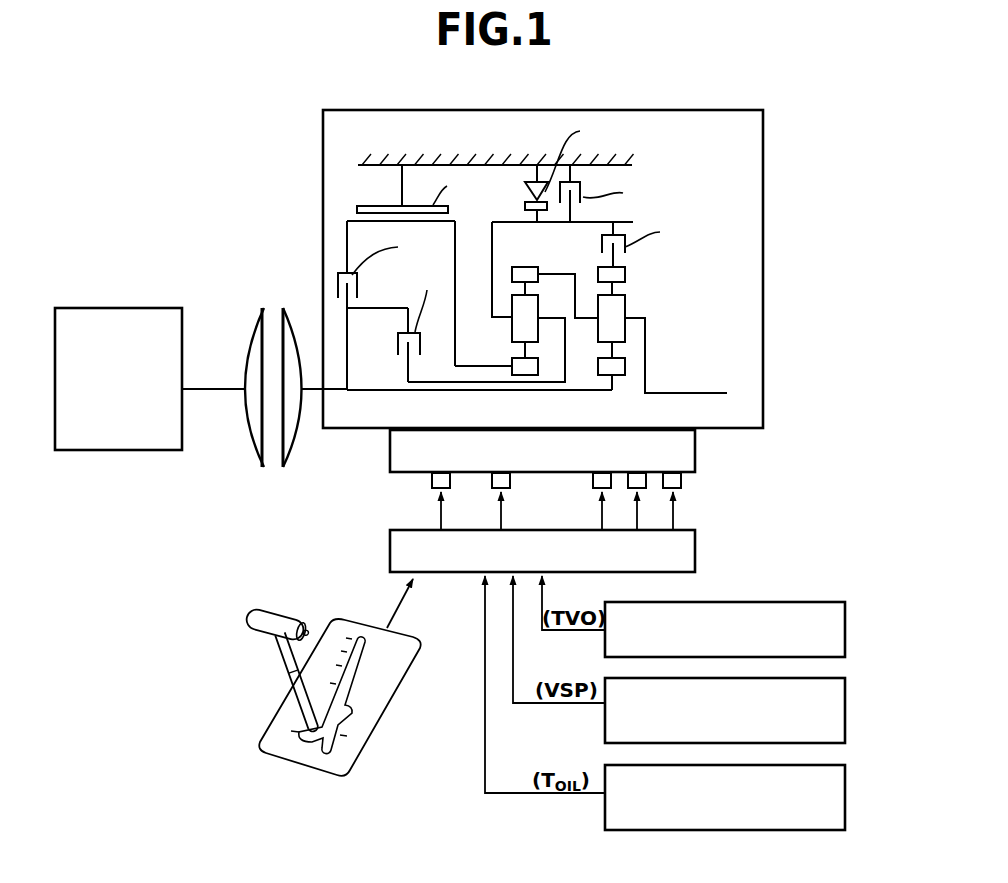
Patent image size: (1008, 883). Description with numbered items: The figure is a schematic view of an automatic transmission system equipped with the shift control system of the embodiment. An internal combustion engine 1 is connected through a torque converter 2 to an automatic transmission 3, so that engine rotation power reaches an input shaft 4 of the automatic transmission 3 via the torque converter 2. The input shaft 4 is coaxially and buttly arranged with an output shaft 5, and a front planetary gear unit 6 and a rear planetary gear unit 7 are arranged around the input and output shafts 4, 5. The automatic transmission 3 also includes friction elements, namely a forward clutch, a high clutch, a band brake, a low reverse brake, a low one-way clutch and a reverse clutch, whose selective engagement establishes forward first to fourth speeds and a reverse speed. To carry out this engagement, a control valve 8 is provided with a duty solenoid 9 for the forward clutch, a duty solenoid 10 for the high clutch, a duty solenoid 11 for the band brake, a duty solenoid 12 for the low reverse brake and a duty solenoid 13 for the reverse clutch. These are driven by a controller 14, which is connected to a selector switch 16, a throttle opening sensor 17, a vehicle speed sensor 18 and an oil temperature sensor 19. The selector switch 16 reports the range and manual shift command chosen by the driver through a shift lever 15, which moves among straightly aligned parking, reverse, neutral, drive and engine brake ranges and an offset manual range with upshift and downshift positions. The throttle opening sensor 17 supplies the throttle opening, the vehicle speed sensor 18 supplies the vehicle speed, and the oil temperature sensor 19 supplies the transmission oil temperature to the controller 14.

The internal combustion engine 1 is at (132, 307).
The torque converter 2 is at (267, 312).
The automatic transmission 3 is at (322, 152).
The input shaft 4 is at (313, 395).
The output shaft 5 is at (715, 392).
The front planetary gear unit 6 is at (516, 258).
The rear planetary gear unit 7 is at (643, 280).
The control valve 8 is at (697, 450).
The duty solenoid 9 is at (450, 484).
The duty solenoid 10 is at (510, 482).
The duty solenoid 11 is at (593, 479).
The duty solenoid 12 is at (647, 484).
The duty solenoid 13 is at (683, 483).
The controller 14 is at (388, 553).
The shift lever 15 is at (255, 628).
The selector switch 16 is at (343, 618).
The throttle opening sensor 17 is at (848, 633).
The vehicle speed sensor 18 is at (848, 710).
The oil temperature sensor 19 is at (848, 800).